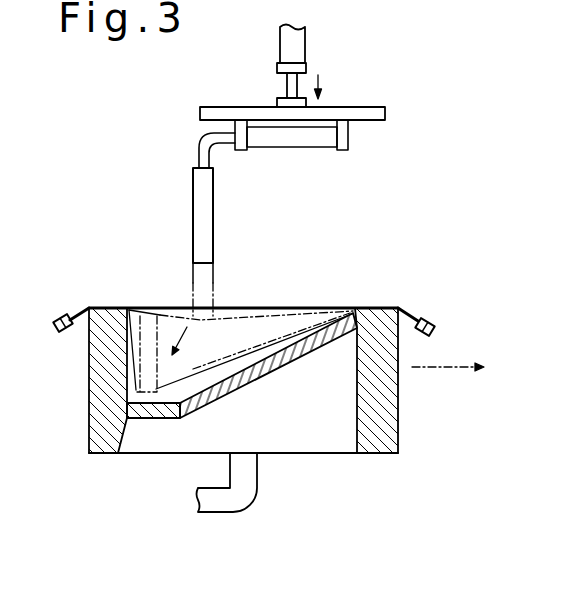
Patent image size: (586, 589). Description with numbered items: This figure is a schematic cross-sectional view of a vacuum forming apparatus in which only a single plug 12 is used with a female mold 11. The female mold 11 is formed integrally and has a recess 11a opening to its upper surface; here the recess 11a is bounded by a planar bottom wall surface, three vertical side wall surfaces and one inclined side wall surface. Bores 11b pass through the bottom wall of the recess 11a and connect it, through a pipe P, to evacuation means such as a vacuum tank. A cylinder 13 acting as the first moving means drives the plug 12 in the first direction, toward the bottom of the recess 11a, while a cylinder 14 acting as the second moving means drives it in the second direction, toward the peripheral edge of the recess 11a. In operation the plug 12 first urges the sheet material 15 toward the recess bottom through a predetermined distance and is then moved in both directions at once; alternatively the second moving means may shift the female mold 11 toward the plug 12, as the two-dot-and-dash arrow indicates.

The female mold 11 is at (398, 403).
The recess 11a is at (128, 397).
The bores 11b is at (178, 418).
The plug 12 is at (213, 216).
The cylinder 13 is at (306, 48).
The cylinder 14 is at (315, 150).
The sheet material 15 is at (348, 308).
The pipe P is at (215, 512).